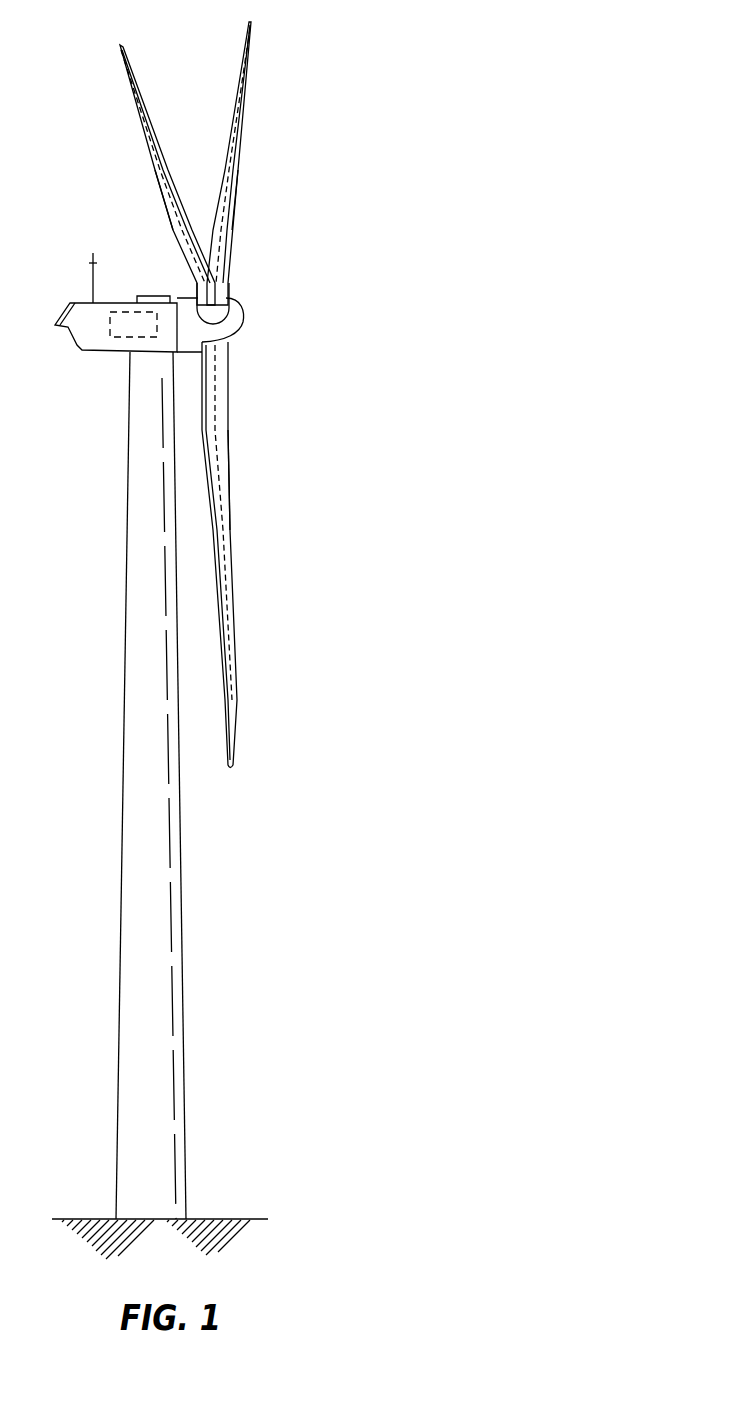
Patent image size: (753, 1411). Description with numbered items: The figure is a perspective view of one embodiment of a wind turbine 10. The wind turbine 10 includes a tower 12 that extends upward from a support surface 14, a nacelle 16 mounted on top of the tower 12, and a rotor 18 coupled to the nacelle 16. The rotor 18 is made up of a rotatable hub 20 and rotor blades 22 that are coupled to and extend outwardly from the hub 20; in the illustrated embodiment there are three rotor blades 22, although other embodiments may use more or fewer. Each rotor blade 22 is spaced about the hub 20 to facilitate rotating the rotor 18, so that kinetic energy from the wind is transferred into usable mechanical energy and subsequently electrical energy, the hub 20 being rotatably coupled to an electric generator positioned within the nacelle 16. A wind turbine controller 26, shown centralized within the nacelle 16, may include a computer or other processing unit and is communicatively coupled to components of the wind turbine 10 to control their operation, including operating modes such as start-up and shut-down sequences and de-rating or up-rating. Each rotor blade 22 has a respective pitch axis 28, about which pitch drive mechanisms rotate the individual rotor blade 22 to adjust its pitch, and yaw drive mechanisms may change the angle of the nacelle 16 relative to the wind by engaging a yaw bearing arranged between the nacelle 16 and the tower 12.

The wind turbine 10 is at (390, 121).
The tower 12 is at (165, 878).
The support surface 14 is at (95, 1218).
The nacelle 16 is at (100, 352).
The rotor 18 is at (284, 261).
The rotatable hub 20 is at (243, 320).
The rotor blade 22 is at (232, 140).
The wind turbine controller 26 is at (118, 310).
The pitch axis 28 is at (160, 190).